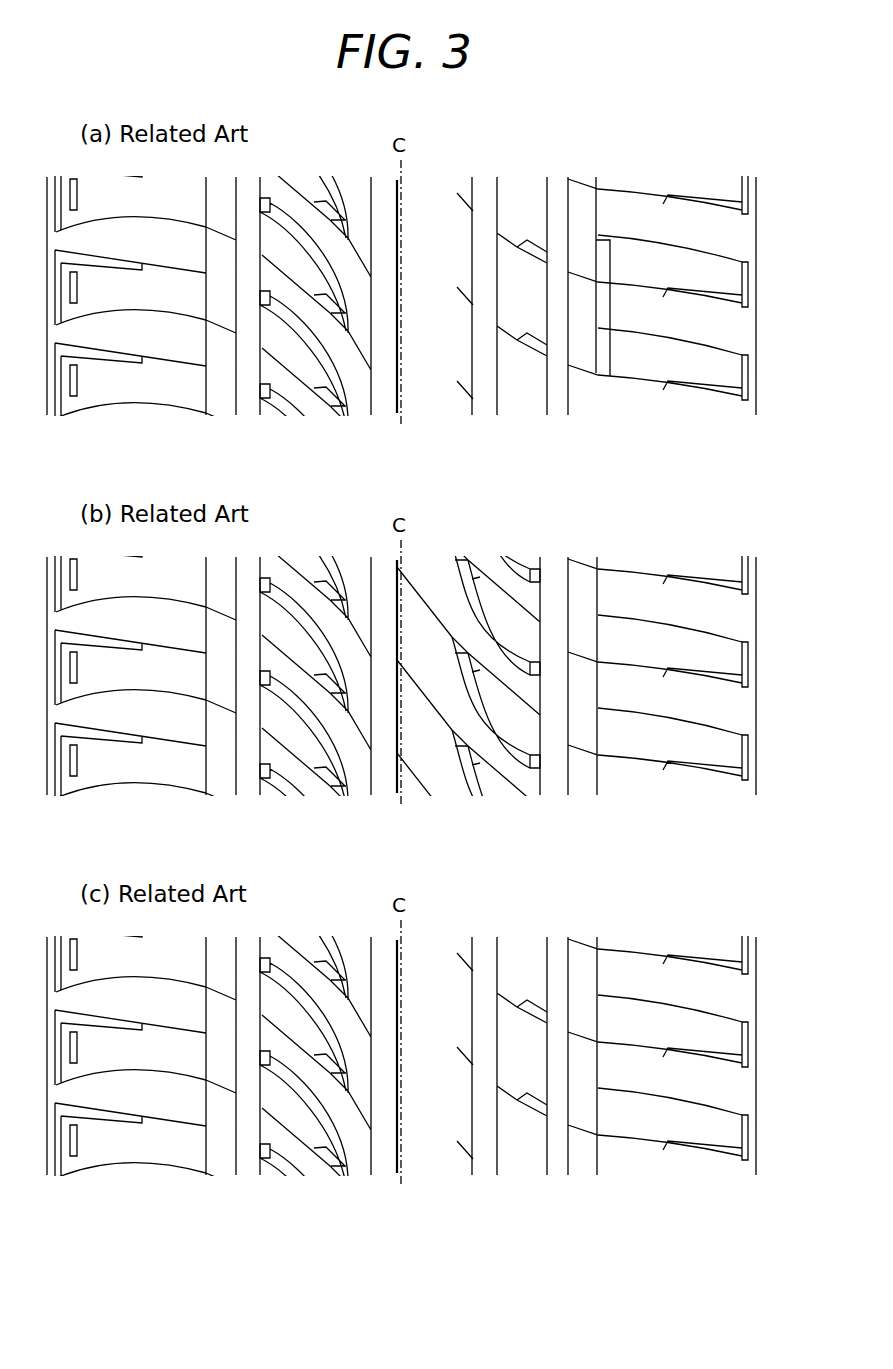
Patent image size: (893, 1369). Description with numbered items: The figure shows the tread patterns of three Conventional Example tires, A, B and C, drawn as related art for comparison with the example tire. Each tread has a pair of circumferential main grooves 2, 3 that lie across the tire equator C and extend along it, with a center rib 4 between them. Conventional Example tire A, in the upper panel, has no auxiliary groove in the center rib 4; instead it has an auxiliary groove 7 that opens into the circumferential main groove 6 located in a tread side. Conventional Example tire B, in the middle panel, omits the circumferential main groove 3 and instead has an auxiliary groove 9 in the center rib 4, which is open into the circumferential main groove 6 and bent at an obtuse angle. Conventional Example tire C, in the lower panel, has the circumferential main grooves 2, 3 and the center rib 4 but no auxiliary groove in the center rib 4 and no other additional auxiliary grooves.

The circumferential main groove 2 is at (385, 398).
The circumferential main groove 3 is at (487, 398).
The center rib 4 is at (458, 190).
The circumferential main groove 6 is at (557, 398).
The auxiliary groove 7 is at (623, 266).
The auxiliary groove 9 is at (502, 737).